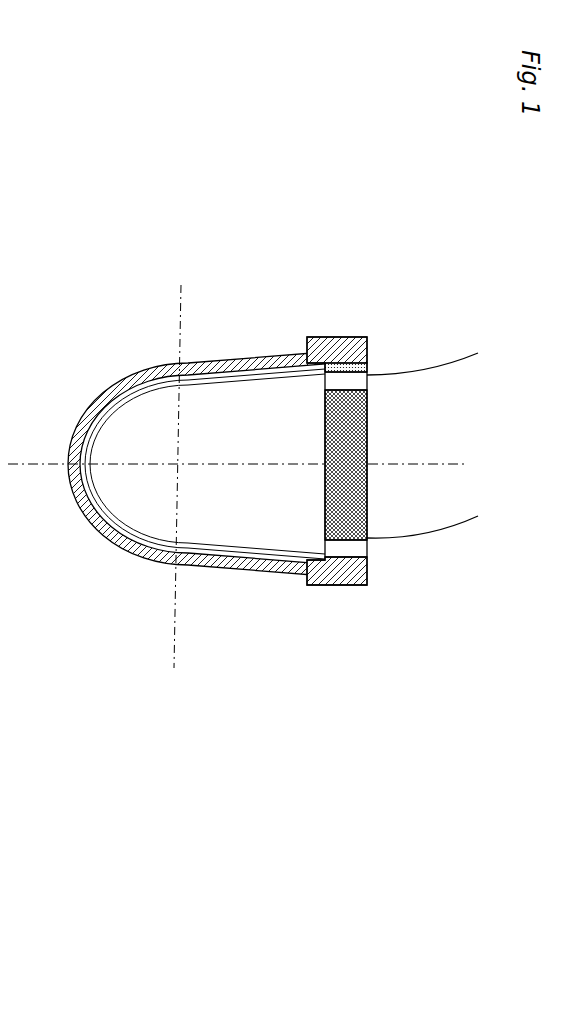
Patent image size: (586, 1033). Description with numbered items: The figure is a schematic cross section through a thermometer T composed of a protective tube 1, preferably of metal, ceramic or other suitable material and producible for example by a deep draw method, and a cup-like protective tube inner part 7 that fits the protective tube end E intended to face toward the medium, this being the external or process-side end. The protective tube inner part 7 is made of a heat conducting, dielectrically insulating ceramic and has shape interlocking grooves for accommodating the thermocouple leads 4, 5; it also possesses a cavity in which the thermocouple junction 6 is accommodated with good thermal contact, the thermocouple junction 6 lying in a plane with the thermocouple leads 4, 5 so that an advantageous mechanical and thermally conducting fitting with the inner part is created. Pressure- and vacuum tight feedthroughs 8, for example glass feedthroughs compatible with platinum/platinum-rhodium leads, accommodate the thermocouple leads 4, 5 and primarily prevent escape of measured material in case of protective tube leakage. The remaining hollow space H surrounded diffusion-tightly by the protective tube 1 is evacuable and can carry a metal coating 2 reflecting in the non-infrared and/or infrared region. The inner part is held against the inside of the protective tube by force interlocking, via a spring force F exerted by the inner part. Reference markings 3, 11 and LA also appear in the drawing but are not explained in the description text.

The protective tube 1 is at (203, 477).
The metal coating 2 is at (133, 383).
The wall 3 is at (298, 548).
The thermocouple lead 4 is at (445, 362).
The thermocouple lead 5 is at (447, 532).
The thermocouple junction 6 is at (83, 460).
The protective tube inner part 7 is at (127, 548).
The pressure- and vacuum tight feedthroughs 8 is at (370, 475).
The sealing ring 11 is at (367, 425).
The protective tube end E is at (99, 372).
The hollow space H is at (228, 416).
The spring force F is at (210, 494).
The thermometer T is at (404, 688).
The longitudinal axis LA is at (487, 462).